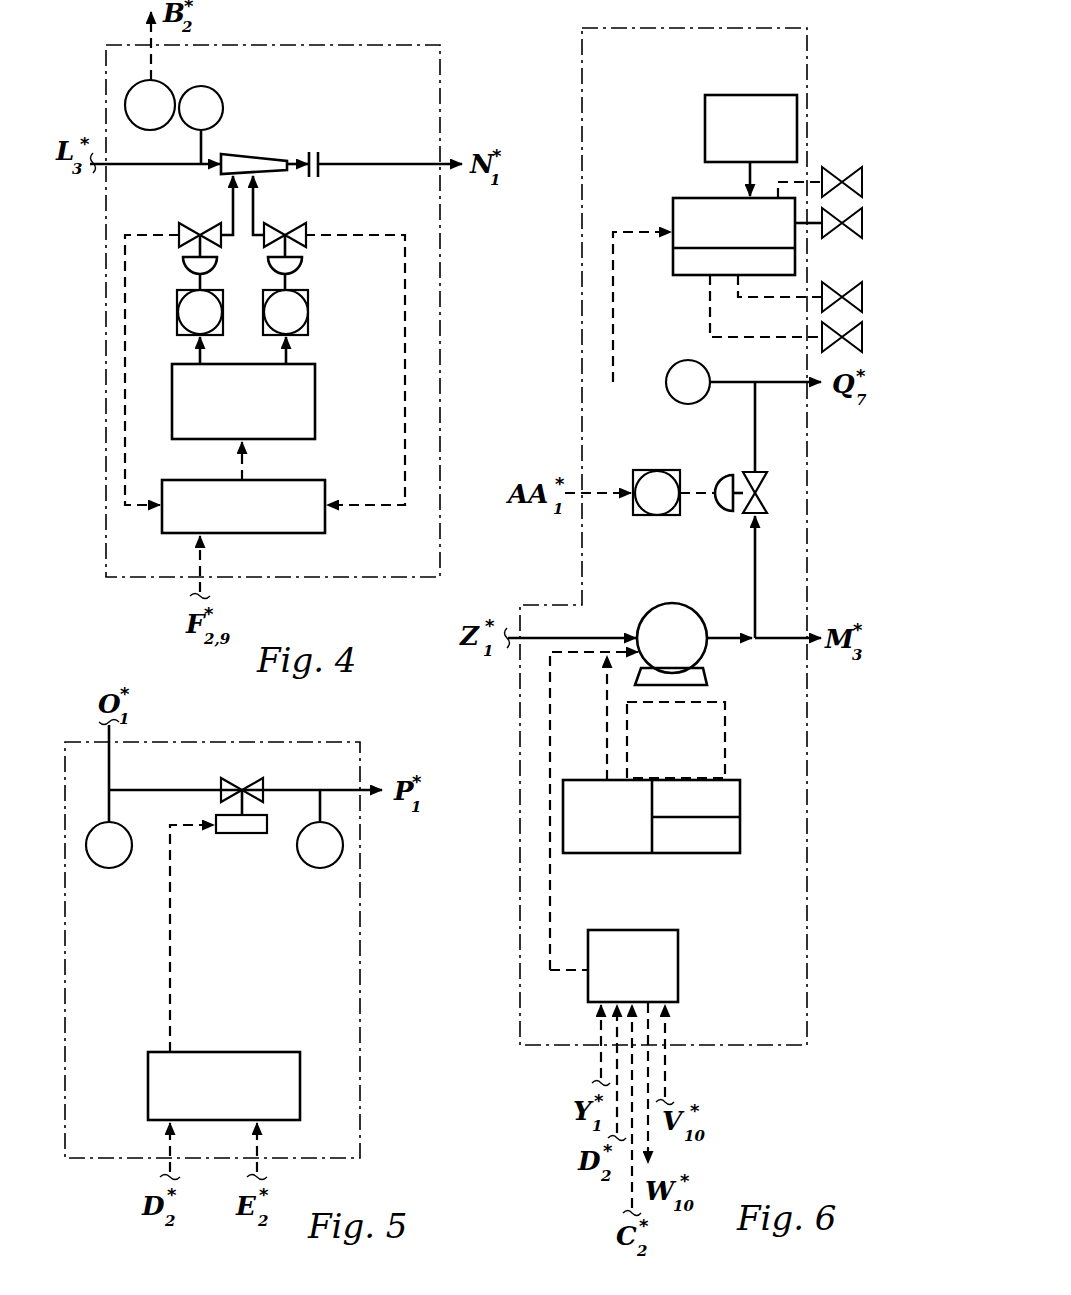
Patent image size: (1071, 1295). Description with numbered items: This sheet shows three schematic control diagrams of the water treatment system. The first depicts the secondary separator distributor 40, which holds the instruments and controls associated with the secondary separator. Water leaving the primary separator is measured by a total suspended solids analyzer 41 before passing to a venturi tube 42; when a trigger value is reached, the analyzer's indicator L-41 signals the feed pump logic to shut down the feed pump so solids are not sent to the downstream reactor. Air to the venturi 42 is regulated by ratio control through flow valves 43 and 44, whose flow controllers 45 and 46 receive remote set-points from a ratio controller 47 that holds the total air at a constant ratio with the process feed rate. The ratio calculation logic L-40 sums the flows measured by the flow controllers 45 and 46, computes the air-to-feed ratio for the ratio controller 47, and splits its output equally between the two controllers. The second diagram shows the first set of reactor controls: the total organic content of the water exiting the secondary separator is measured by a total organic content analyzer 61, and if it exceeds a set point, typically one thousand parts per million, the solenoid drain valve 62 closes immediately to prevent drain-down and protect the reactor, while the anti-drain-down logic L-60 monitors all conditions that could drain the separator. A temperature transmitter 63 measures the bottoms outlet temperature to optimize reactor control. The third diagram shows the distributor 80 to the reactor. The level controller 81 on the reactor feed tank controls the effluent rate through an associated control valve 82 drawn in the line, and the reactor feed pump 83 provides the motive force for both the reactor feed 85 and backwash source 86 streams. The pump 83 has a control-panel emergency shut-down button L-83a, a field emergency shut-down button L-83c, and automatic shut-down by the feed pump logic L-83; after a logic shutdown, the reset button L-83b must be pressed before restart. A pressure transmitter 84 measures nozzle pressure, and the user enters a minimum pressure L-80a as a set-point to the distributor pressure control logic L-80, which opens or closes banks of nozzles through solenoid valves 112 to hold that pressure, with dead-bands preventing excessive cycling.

In FIG. 4, the secondary separator distributor 40 is at (103, 290).
In FIG. 4, the total suspended solids analyzer 41 is at (223, 97).
In FIG. 4, the indicator L-41 is at (172, 86).
In FIG. 4, the venturi tube 42 is at (258, 154).
In FIG. 4, the flow valve 43 is at (182, 230).
In FIG. 4, the flow valve 44 is at (307, 228).
In FIG. 4, the flow controller 45 is at (177, 292).
In FIG. 4, the flow controller 46 is at (310, 290).
In FIG. 4, the ratio controller 47 is at (317, 364).
In FIG. 4, the ratio calculation logic L-40 is at (325, 533).
In FIG. 5, the total organic content analyzer 61 is at (303, 865).
In FIG. 5, the drain valve 62 is at (230, 834).
In FIG. 5, the temperature transmitter 63 is at (120, 865).
In FIG. 5, the anti-drain-down logic L-60 is at (268, 1052).
In FIG. 6, the distributor 80 is at (580, 83).
In FIG. 6, the distributor pressure control logic L-80 is at (676, 197).
In FIG. 6, the minimum pressure L-80a is at (713, 93).
In FIG. 6, the solenoid valves 112 is at (836, 215).
In FIG. 6, the level controller 81 is at (655, 517).
In FIG. 6, the level control valve 82 is at (745, 472).
In FIG. 6, the reactor feed pump 83 is at (688, 605).
In FIG. 6, the pressure transmitter 84 is at (673, 403).
In FIG. 6, the reactor feed stream 85 is at (753, 428).
In FIG. 6, the backwash source stream 86 is at (775, 640).
In FIG. 6, the reactor feed pump logic L-83 is at (682, 972).
In FIG. 6, the control-panel-located emergency shut-down button L-83a is at (610, 853).
In FIG. 6, the reset button L-83b is at (698, 853).
In FIG. 6, the field-located emergency shut-down button L-83c is at (727, 731).